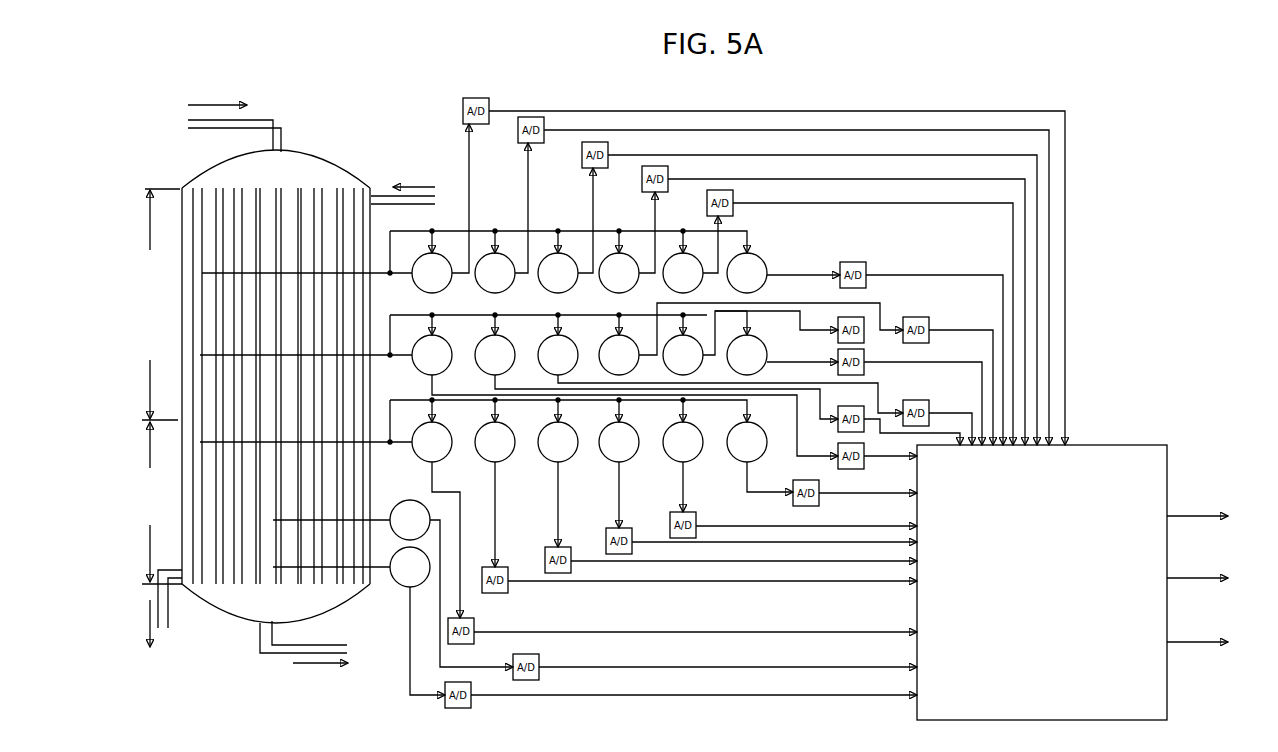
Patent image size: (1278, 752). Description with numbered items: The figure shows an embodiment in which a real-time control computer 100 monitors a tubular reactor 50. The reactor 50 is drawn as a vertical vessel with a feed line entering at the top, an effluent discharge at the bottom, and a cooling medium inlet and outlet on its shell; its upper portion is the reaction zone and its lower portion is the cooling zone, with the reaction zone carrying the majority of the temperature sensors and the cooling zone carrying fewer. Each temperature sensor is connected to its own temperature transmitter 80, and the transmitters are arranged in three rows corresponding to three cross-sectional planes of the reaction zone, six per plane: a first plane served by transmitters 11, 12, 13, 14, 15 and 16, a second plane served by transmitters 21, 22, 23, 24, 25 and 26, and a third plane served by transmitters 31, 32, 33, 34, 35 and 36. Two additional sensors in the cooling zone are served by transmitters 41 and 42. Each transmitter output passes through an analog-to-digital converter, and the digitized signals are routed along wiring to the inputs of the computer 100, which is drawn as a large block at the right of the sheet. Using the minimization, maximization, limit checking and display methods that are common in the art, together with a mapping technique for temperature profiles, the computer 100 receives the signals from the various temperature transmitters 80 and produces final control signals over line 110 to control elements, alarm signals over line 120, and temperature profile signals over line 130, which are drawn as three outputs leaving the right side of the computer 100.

The reactor 50 is at (306, 158).
The temperature transmitter 80 is at (726, 403).
The computer 100 is at (1143, 411).
The line 110 is at (1219, 514).
The line 120 is at (1234, 579).
The line 130 is at (1234, 643).
The temperature transmitter TT11 11 is at (432, 273).
The temperature transmitter TT12 12 is at (495, 273).
The temperature transmitter TT13 13 is at (558, 273).
The temperature transmitter TT14 14 is at (619, 273).
The temperature transmitter TT15 15 is at (683, 273).
The temperature transmitter TT16 16 is at (747, 273).
The temperature transmitter TT21 21 is at (432, 355).
The temperature transmitter TT22 22 is at (495, 355).
The temperature transmitter TT23 23 is at (558, 355).
The temperature transmitter TT24 24 is at (619, 355).
The temperature transmitter TT25 25 is at (683, 355).
The temperature transmitter TT26 26 is at (747, 355).
The temperature transmitter TT31 31 is at (432, 442).
The temperature transmitter TT32 32 is at (495, 442).
The temperature transmitter TT33 33 is at (558, 442).
The temperature transmitter TT34 34 is at (619, 442).
The temperature transmitter TT35 35 is at (683, 442).
The temperature transmitter TT36 36 is at (747, 442).
The temperature transmitter TT41 41 is at (410, 520).
The temperature transmitter TT42 42 is at (410, 567).